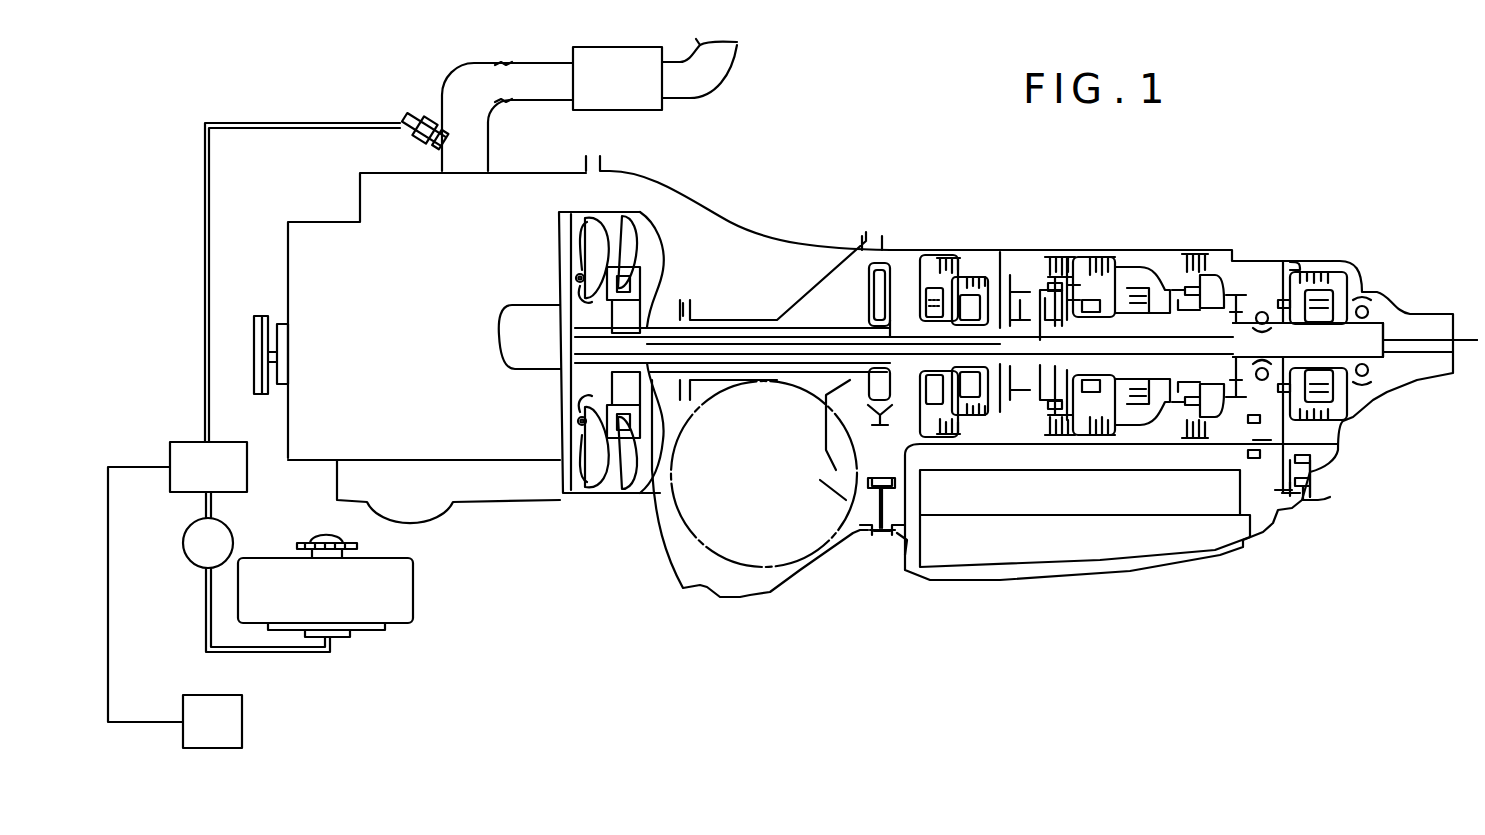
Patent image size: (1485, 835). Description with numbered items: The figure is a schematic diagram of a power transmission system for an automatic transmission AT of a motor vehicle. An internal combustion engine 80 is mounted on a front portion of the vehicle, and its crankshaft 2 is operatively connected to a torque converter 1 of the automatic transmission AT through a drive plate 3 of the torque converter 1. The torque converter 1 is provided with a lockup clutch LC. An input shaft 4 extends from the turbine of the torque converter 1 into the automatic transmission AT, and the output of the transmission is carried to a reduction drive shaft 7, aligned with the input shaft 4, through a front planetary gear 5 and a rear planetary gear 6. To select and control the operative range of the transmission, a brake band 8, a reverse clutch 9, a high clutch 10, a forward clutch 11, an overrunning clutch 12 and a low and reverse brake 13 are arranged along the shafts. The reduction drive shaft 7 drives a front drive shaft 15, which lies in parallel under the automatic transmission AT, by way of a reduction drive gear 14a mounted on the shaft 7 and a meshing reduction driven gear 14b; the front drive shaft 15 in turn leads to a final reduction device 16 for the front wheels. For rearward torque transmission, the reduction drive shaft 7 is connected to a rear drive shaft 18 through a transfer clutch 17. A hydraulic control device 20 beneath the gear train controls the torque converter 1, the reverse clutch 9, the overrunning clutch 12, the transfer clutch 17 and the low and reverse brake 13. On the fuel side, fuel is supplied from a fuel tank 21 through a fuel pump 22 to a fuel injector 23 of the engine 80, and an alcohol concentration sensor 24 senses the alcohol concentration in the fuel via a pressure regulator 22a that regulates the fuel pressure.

The torque converter 1 is at (675, 220).
The crankshaft 2 is at (551, 352).
The drive plate 3 is at (557, 262).
The input shaft 4 is at (755, 330).
The front planetary gear 5 is at (1019, 278).
The rear planetary gear 6 is at (1068, 290).
The reduction drive shaft 7 is at (1240, 300).
The brake band 8 is at (957, 254).
The reverse clutch 9 is at (940, 254).
The high clutch 10 is at (985, 264).
The forward clutch 11 is at (1060, 256).
The overrunning clutch 12 is at (1115, 254).
The low and reverse brake 13 is at (1190, 254).
The reduction drive gear 14a is at (1292, 288).
The reduction driven gear 14b is at (1320, 495).
The front drive shaft 15 is at (908, 545).
The final reduction device 16 is at (748, 588).
The transfer clutch 17 is at (1322, 278).
The rear drive shaft 18 is at (1422, 337).
The hydraulic control device 20 is at (1108, 540).
The fuel tank 21 is at (413, 575).
The fuel pump 22 is at (232, 524).
The pressure regulator 22a is at (247, 460).
The fuel injector 23 is at (405, 120).
The alcohol concentration sensor 24 is at (203, 695).
The internal combustion engine 80 is at (382, 332).
The lockup clutch LC is at (578, 432).
The automatic transmission AT is at (1145, 169).